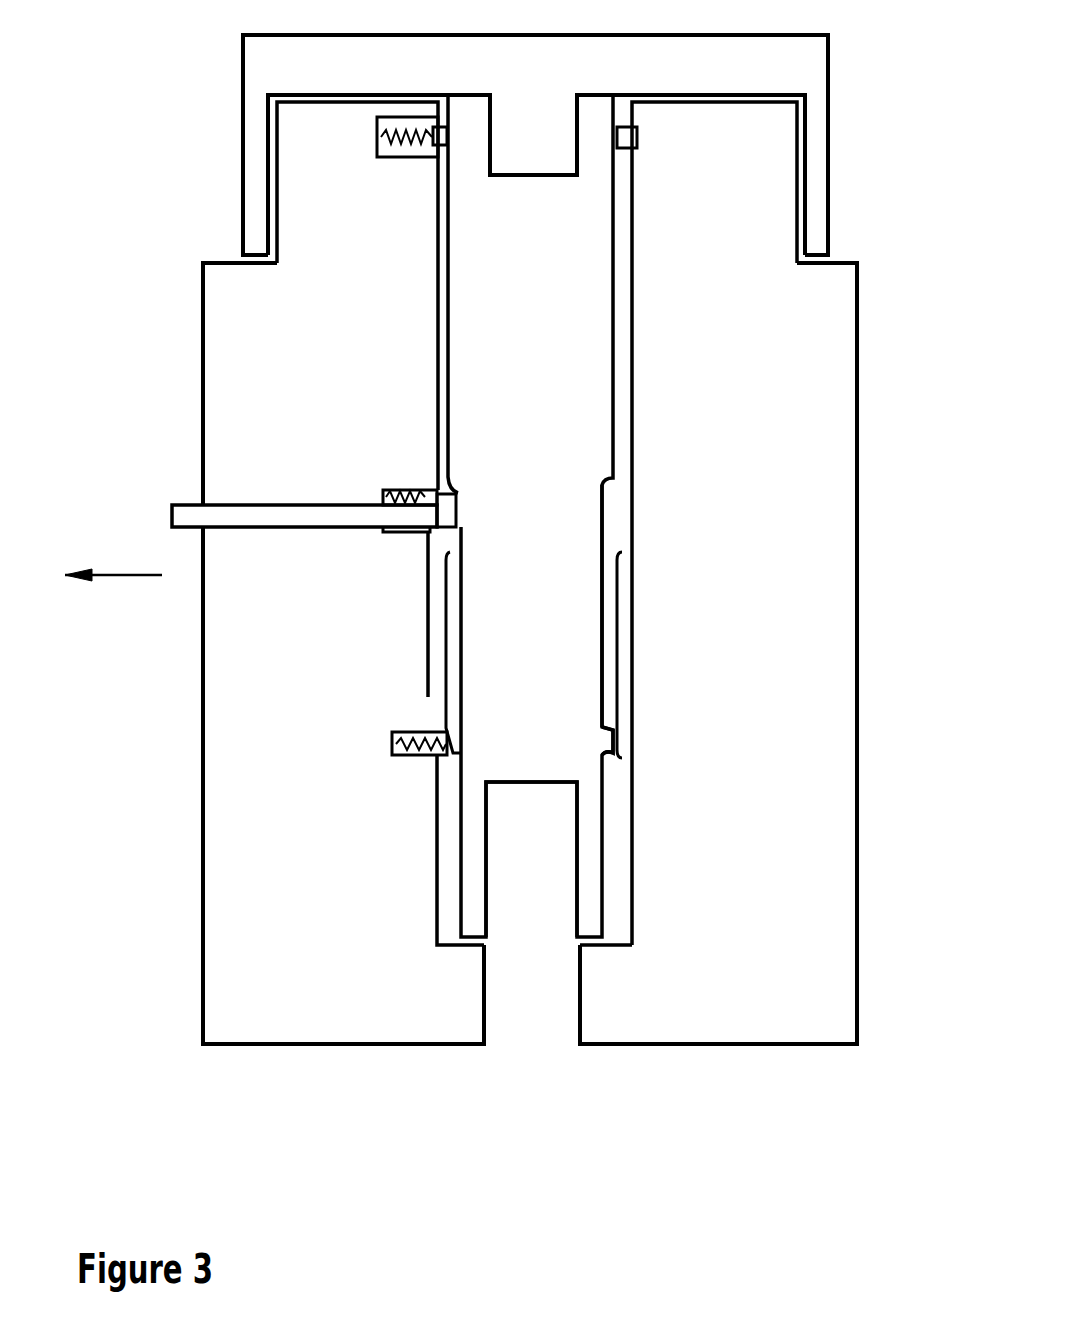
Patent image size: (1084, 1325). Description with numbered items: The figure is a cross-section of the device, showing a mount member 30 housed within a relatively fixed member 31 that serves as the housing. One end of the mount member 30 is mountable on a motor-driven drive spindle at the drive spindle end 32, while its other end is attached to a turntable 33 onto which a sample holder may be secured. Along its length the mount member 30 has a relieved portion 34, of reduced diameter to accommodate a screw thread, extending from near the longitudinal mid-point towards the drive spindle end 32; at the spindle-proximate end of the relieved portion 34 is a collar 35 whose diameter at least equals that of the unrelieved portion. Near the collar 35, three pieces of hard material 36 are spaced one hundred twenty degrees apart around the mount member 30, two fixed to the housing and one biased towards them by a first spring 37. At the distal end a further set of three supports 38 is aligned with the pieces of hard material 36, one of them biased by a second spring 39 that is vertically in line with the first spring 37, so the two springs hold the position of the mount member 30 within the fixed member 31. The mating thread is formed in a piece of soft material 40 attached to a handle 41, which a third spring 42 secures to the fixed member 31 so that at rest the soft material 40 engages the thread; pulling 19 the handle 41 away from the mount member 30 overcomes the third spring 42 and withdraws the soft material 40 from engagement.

The pulling direction 19 is at (113, 605).
The mount member 30 is at (597, 325).
The relatively fixed member 31 is at (850, 432).
The drive spindle end 32 is at (560, 893).
The turntable 33 is at (772, 33).
The relieved portion 34 is at (627, 503).
The collar 35 is at (602, 742).
The pieces of hard material 36 is at (620, 597).
The first spring 37 is at (397, 732).
The supports 38 is at (643, 135).
The second spring 39 is at (363, 142).
The piece of soft material 40 is at (462, 490).
The handle 41 is at (312, 505).
The third spring 42 is at (398, 490).